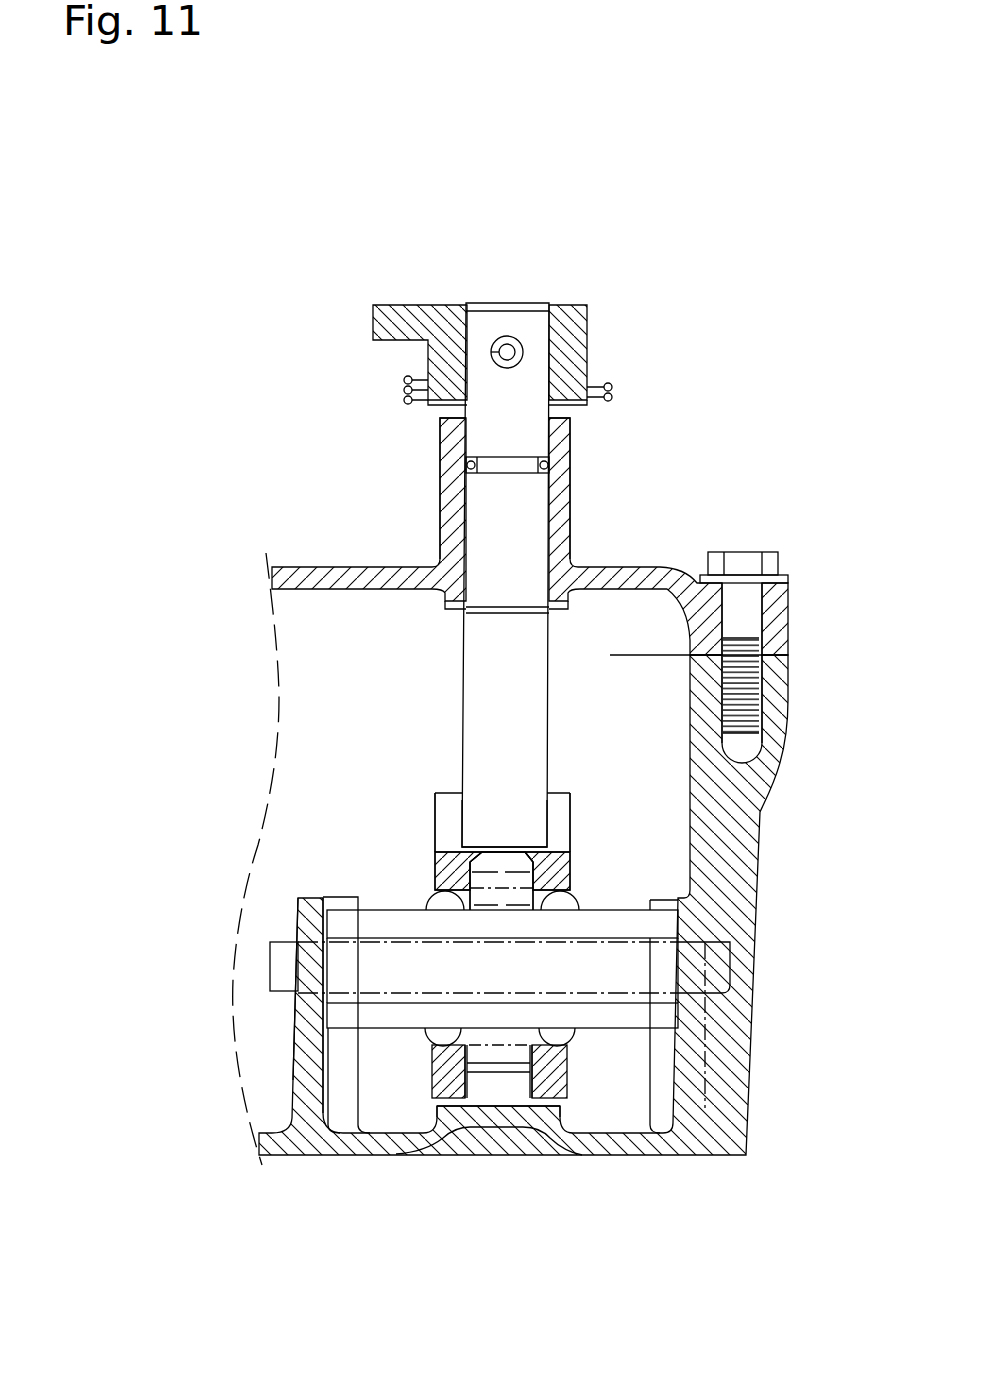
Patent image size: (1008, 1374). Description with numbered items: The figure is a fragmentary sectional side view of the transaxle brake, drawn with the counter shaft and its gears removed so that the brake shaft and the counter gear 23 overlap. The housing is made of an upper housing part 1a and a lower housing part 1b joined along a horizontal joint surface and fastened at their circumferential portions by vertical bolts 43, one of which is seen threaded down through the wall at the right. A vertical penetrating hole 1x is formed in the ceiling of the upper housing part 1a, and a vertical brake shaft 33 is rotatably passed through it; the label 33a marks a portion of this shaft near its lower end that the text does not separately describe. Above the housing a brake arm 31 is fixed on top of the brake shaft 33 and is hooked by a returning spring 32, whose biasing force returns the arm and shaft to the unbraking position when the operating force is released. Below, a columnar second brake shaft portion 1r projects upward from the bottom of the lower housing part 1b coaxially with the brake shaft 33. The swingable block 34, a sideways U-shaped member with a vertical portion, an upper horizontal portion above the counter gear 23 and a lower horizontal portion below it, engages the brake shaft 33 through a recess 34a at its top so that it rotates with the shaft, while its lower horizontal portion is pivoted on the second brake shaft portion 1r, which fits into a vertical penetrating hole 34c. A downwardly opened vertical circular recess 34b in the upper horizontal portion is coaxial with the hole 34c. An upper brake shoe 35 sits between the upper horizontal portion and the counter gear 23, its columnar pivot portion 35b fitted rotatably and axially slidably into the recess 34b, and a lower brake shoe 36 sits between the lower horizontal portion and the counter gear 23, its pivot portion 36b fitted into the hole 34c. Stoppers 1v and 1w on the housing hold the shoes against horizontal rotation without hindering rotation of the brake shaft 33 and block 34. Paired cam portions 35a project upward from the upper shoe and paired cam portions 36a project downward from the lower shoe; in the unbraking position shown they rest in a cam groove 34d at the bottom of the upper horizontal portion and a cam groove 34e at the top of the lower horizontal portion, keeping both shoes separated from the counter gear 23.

The upper housing part 1a is at (789, 633).
The lower housing part 1b is at (787, 697).
The vertical penetrating hole 1x is at (463, 520).
The stopper 1v is at (298, 917).
The stopper 1w is at (653, 1100).
The second brake shaft portion 1r is at (510, 1053).
The brake arm 31 is at (586, 350).
The returning spring 32 is at (407, 397).
The brake shaft 33 is at (515, 525).
The lower end of shaft 33a is at (487, 810).
The swingable block 34 is at (560, 873).
The recess 34a is at (450, 818).
The vertical circular recess 34b is at (507, 860).
The vertical penetrating hole 34c is at (487, 1067).
The cam groove 34d is at (434, 855).
The cam groove 34e is at (470, 1082).
The upper brake shoe 35 is at (658, 926).
The cam portions 35a is at (429, 892).
The pivot portion 35b is at (514, 882).
The counter gear 23 is at (730, 972).
The lower brake shoe 36 is at (616, 1022).
The cam portions 36a is at (427, 1027).
The pivot portion 36b is at (500, 1093).
The vertical bolts 43 is at (742, 552).